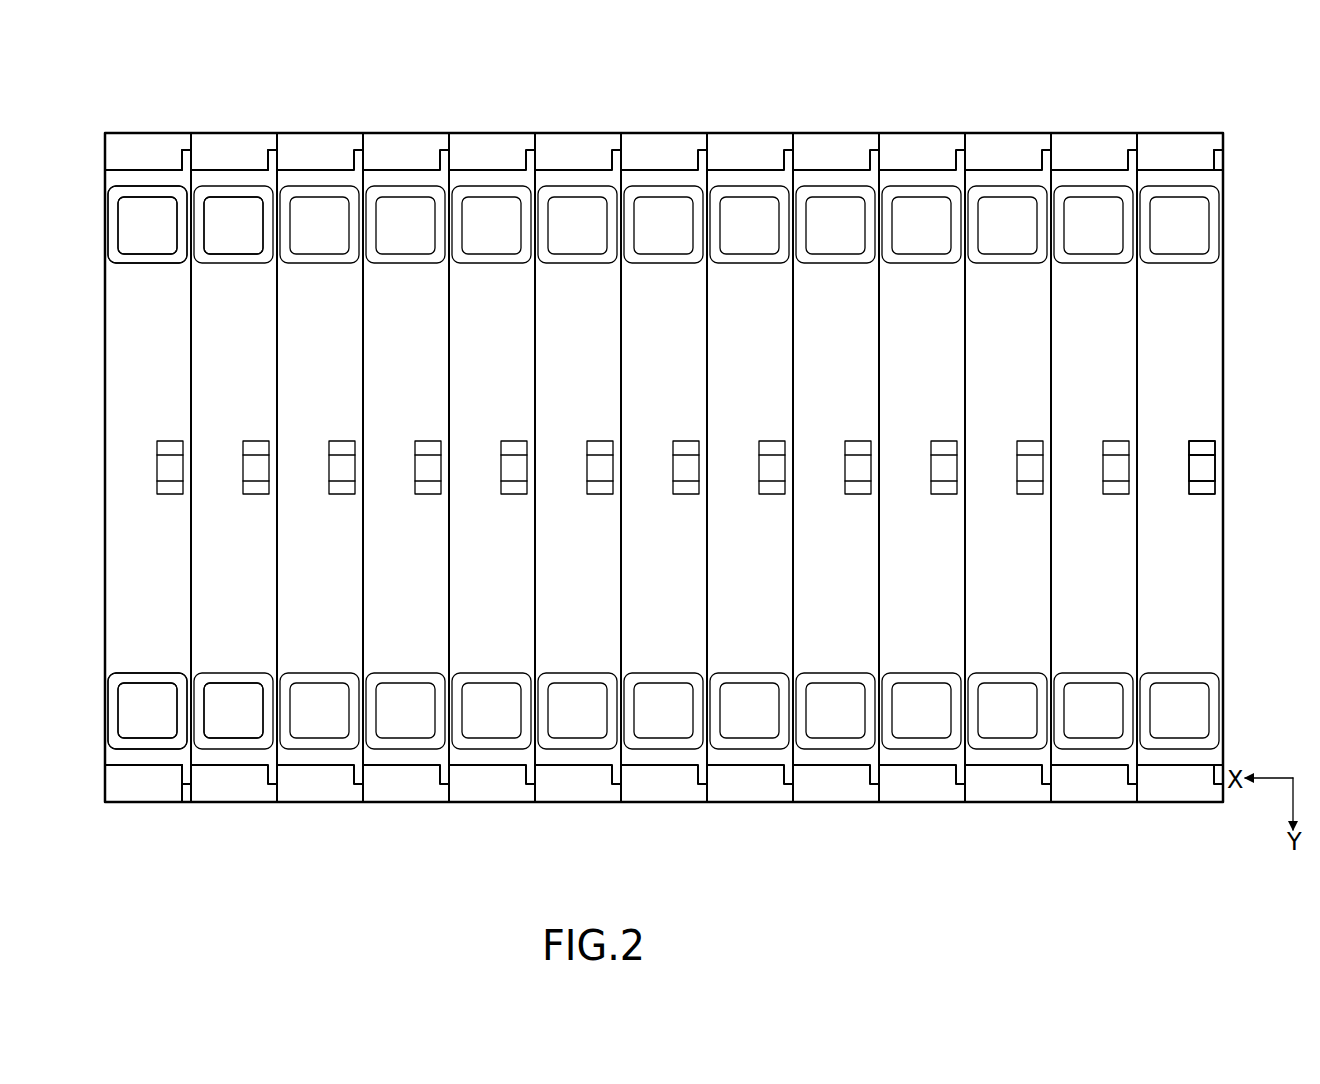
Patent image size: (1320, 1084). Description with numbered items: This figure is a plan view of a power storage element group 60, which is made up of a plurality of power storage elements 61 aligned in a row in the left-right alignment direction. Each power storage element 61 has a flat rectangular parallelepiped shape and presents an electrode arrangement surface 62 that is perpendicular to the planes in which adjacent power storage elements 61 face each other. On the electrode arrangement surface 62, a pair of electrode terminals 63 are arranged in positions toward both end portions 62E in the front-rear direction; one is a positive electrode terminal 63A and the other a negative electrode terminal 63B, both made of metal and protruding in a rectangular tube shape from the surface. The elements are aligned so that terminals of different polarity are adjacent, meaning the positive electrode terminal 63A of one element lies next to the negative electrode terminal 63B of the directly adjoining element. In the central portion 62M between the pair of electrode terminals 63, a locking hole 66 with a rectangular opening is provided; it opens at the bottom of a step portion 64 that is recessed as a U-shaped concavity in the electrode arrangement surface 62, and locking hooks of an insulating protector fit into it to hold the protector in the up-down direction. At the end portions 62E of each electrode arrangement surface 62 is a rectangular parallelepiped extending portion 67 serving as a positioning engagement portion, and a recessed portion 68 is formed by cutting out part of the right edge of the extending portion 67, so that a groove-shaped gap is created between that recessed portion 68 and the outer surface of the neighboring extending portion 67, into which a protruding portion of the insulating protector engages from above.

The power storage element group 60 is at (765, 112).
The power storage element 61 is at (133, 152).
The electrode arrangement surface 62 is at (1188, 330).
The end portion 62E is at (1187, 132).
The central portion 62M is at (1218, 472).
The electrode terminal 63 is at (252, 97).
The positive electrode terminal 63A is at (148, 214).
The negative electrode terminal 63B is at (148, 712).
The step portion 64 is at (1200, 447).
The locking hole 66 is at (1200, 461).
The extending portion 67 is at (139, 785).
The recessed portion 68 is at (183, 776).